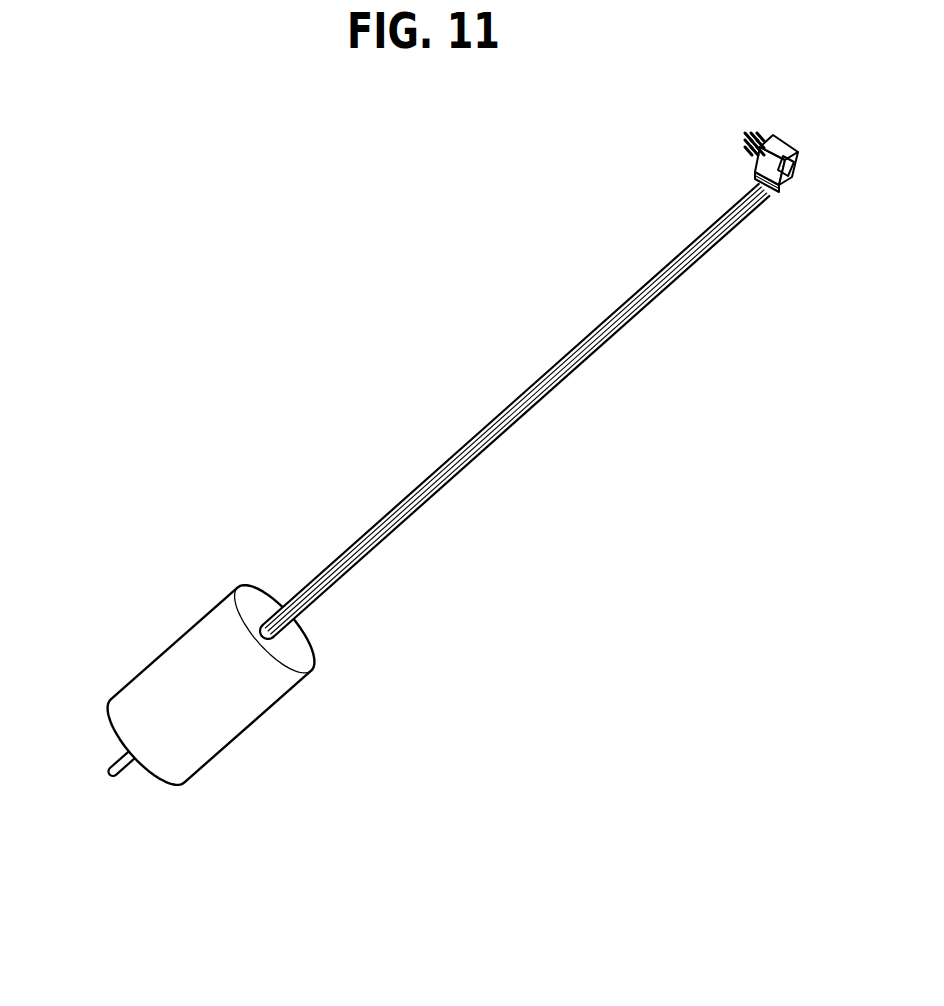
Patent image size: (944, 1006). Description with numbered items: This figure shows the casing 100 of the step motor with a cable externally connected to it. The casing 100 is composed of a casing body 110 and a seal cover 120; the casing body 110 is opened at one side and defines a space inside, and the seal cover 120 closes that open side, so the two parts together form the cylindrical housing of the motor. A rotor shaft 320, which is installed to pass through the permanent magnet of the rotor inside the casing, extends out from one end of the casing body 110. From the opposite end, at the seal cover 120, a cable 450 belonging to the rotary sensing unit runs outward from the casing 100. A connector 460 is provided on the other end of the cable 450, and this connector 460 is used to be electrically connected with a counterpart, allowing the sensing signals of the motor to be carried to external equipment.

The casing 100 is at (312, 685).
The casing body 110 is at (215, 727).
The seal cover 120 is at (301, 660).
The rotor shaft 320 is at (122, 765).
The cable 450 is at (522, 413).
The connector 460 is at (785, 147).